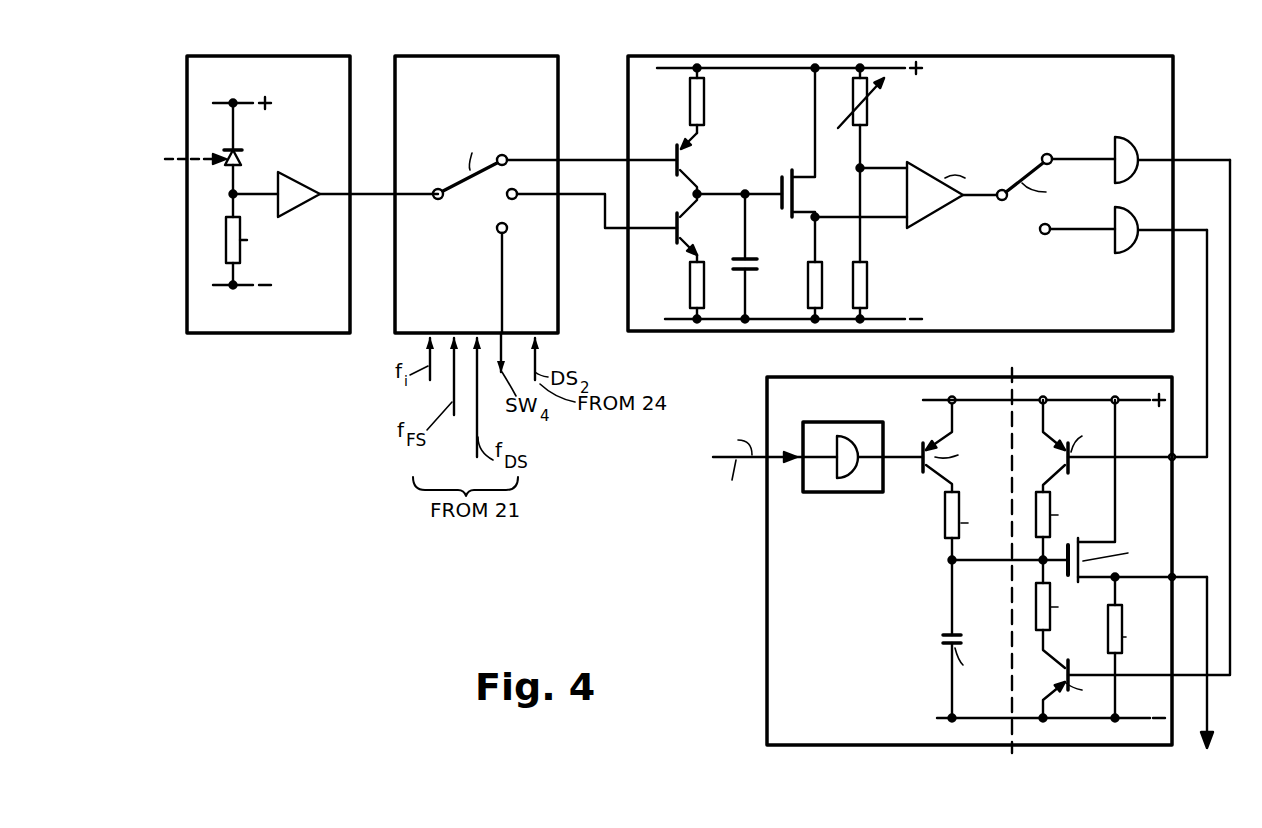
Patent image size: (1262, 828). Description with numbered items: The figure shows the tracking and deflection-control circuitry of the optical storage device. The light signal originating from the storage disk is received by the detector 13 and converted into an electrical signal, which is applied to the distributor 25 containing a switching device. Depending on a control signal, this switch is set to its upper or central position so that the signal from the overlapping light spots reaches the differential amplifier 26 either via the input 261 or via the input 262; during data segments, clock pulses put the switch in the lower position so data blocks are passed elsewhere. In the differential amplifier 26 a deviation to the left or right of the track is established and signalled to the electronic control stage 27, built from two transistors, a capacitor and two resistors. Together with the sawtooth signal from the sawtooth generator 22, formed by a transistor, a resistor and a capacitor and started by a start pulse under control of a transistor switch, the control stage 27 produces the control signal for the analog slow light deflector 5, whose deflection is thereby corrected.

The detector 13 is at (302, 323).
The distributor 25 is at (540, 74).
The differential amplifier 26 is at (1160, 102).
The input 261 is at (618, 158).
The inputs 262 is at (620, 232).
The sawtooth generator 22 is at (895, 388).
The electronic control stage 27 is at (1083, 390).
The slow light deflector 5 is at (1210, 708).